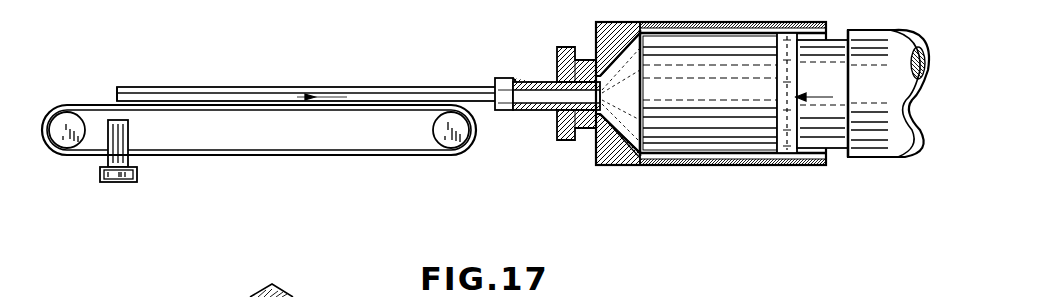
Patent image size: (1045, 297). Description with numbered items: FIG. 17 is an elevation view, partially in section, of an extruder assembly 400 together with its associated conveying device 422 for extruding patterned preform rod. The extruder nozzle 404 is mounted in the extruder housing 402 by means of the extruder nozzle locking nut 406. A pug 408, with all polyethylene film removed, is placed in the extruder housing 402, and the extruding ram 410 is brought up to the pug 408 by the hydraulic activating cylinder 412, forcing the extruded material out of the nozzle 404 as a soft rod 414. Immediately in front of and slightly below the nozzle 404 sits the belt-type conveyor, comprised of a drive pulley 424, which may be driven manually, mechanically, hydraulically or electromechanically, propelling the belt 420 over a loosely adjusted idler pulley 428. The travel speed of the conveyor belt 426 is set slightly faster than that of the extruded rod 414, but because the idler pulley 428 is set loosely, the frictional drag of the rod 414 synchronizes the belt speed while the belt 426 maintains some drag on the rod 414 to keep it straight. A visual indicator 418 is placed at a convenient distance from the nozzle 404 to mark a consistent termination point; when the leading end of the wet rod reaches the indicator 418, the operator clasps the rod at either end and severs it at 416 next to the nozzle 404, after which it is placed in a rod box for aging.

The spray nozzle assembly 400 is at (688, 124).
The extruder housing 402 is at (607, 166).
The extruder nozzle 404 is at (523, 49).
The extruder nozzle locking nut 406 is at (567, 47).
The pug 408 is at (720, 140).
The extruding ram 410 is at (792, 167).
The hydraulic activating cylinder 412 is at (888, 147).
The extruded rod 414 is at (207, 90).
The severing point 416 is at (495, 79).
The visual indicator 418 is at (144, 150).
The belt 420 is at (118, 87).
The conveyor belt assembly 422 is at (285, 128).
The drive pulley 424 is at (476, 136).
The conveyor belt 426 is at (381, 161).
The idler pulley 428 is at (66, 112).